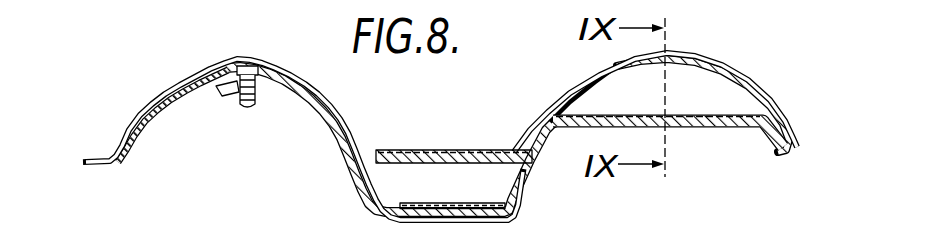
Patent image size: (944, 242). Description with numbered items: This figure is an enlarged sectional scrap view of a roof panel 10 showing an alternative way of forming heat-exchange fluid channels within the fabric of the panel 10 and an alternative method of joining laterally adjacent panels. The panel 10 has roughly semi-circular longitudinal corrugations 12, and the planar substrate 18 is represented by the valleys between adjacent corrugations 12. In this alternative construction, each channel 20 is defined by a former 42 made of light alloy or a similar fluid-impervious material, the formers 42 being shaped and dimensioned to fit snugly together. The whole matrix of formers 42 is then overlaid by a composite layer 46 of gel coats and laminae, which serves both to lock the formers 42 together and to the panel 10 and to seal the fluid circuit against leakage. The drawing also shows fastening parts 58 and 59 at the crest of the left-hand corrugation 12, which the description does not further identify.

The panel 10 is at (112, 127).
The longitudinal corrugation 12 is at (760, 90).
The substrate 18 is at (456, 150).
The channel 20 is at (582, 108).
The channel former 42 is at (430, 204).
The composite layer 46 is at (370, 197).
The screw 58 is at (250, 108).
The retainer 59 is at (223, 89).